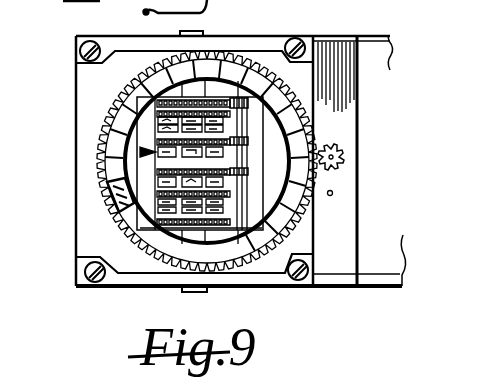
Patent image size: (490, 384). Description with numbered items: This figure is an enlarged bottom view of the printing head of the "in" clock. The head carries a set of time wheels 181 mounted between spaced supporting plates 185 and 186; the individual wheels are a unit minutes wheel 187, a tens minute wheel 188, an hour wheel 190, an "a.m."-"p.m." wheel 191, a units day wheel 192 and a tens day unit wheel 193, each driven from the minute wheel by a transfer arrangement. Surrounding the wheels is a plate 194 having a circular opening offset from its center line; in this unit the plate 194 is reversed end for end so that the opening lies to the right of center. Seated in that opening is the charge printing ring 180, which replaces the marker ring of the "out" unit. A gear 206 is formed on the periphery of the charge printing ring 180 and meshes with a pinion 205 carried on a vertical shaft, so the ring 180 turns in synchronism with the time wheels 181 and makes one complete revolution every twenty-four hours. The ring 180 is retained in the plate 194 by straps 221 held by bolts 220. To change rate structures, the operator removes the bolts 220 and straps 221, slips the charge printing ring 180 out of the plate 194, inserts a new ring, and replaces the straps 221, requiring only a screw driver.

The charge printing ring 180 is at (320, 113).
The time wheels 181 is at (140, 150).
The supporting plate 185 is at (388, 36).
The supporting plate 186 is at (378, 288).
The unit minutes wheel 187 is at (152, 119).
The tens minute wheel 188 is at (153, 128).
The hour wheel 190 is at (143, 157).
The "a.m."-"p.m." wheel 191 is at (127, 178).
The units day wheel 192 is at (143, 203).
The tens day unit wheel 193 is at (137, 212).
The plate 194 is at (305, 235).
The pinion 205 is at (344, 150).
The gear 206 is at (332, 192).
The bolts 220 is at (78, 49).
The straps 221 is at (217, 36).